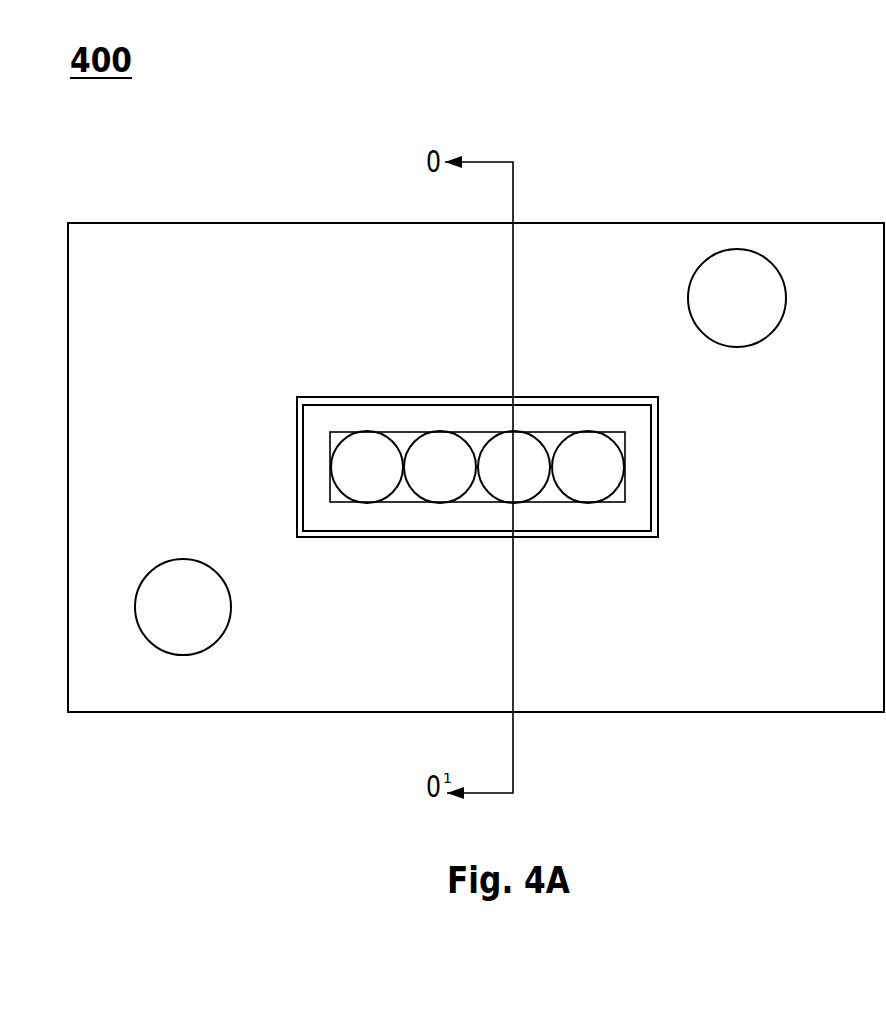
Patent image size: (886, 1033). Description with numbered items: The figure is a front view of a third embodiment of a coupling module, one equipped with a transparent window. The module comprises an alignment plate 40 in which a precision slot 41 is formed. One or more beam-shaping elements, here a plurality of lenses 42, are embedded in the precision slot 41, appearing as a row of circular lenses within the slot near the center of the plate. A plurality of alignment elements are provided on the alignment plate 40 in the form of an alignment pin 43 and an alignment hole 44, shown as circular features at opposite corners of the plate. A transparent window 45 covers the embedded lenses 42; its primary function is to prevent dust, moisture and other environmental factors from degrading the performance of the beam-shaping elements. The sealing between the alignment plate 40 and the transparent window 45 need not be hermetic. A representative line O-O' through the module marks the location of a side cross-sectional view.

The alignment plate 40 is at (213, 347).
The precision slot 41 is at (333, 437).
The lenses 42 is at (355, 448).
The alignment pin 43 is at (208, 608).
The alignment hole 44 is at (748, 308).
The transparent window 45 is at (632, 535).